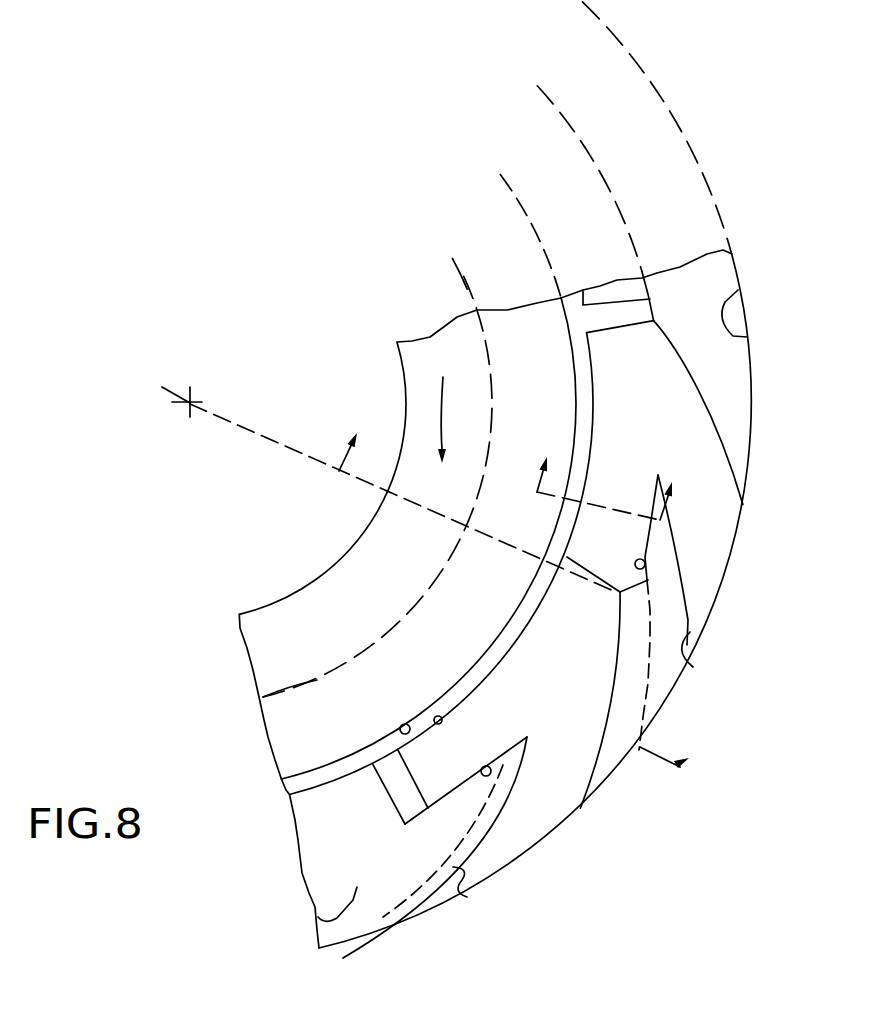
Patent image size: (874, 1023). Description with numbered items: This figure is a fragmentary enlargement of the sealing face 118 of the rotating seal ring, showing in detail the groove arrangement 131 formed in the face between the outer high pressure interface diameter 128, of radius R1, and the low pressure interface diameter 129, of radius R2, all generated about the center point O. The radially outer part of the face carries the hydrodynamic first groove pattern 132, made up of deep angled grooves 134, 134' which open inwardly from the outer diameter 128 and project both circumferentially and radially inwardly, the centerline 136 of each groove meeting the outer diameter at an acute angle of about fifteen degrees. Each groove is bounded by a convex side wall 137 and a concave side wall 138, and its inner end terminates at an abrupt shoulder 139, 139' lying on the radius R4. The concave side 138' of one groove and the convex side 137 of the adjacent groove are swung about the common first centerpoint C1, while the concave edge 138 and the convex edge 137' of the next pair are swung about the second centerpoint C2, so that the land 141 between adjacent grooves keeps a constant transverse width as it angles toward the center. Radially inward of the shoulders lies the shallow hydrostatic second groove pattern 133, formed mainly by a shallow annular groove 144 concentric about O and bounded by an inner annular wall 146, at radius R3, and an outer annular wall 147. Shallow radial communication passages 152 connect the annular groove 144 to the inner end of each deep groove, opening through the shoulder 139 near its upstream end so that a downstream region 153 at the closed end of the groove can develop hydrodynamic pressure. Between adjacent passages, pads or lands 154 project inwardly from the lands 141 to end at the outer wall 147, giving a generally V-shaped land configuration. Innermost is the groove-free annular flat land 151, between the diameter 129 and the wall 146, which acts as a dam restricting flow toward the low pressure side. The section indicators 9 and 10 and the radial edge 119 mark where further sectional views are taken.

The sealing face 118 is at (485, 561).
The radial edge of segment 119 is at (254, 765).
The outer diameter 128 is at (743, 282).
The low pressure interface diameter 129 is at (400, 620).
The groove arrangement 131 is at (709, 425).
The first groove pattern 132 is at (339, 865).
The second groove pattern 133 is at (286, 819).
The angled groove 134 is at (710, 695).
The angled groove 134' is at (435, 851).
The centerline 136 is at (650, 587).
The side wall 137 is at (623, 797).
The side wall 137' is at (291, 912).
The side wall 138 is at (725, 659).
The concave side 138' is at (498, 892).
The shoulder 139 is at (614, 541).
The shoulder 139' is at (466, 780).
The land 141 is at (700, 587).
The annular groove 144 is at (460, 695).
The inner annular wall 146 is at (406, 722).
The outer annular wall 147 is at (441, 723).
The annular flat land 151 is at (283, 733).
The communication passage 152 is at (628, 320).
The downstream region 153 is at (663, 542).
The land 154 is at (620, 393).
The section line 9- 9 is at (439, 590).
The section line 10- 10 is at (606, 482).
The center point O is at (190, 403).
The first centerpoint C1 is at (122, 723).
The second centerpoint C2 is at (289, 707).
The high pressure radius R1 is at (572, 13).
The low pressure radius R2 is at (440, 285).
The radius R3 is at (487, 184).
The radius R4 is at (530, 104).